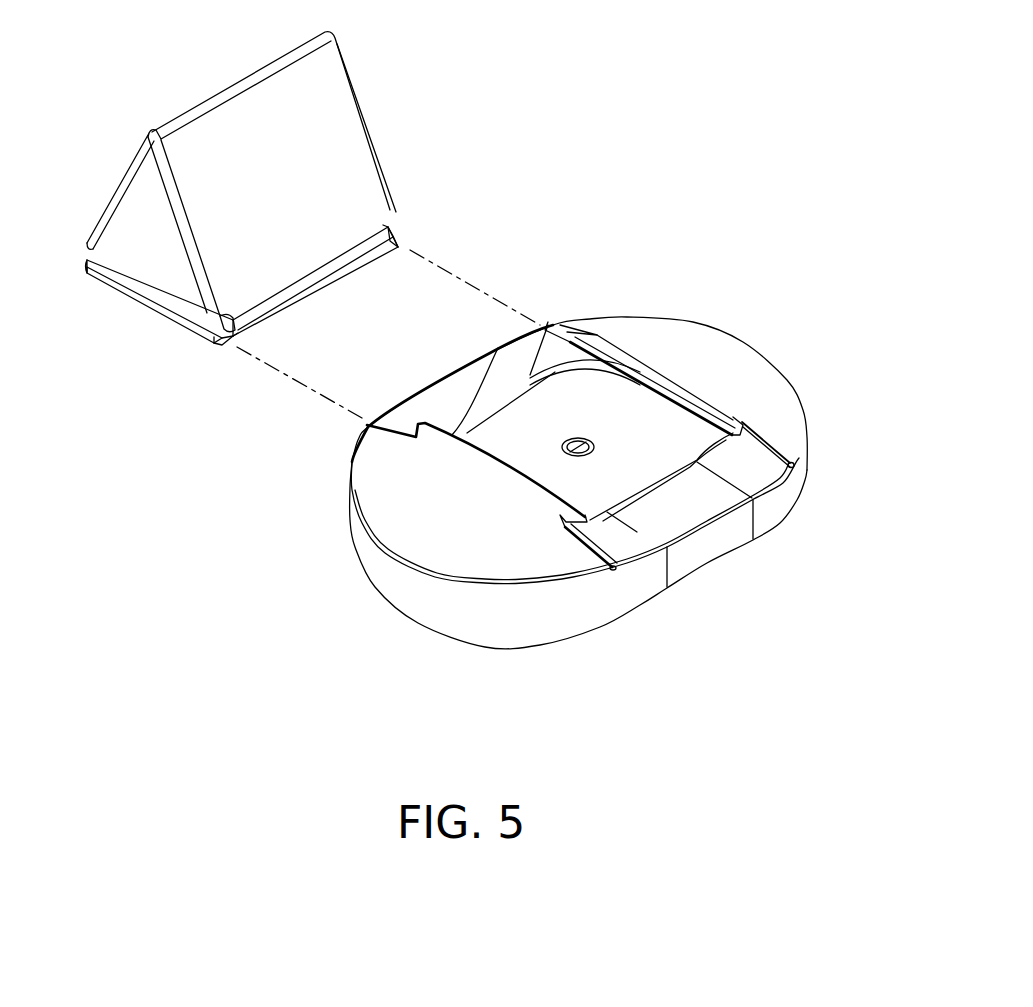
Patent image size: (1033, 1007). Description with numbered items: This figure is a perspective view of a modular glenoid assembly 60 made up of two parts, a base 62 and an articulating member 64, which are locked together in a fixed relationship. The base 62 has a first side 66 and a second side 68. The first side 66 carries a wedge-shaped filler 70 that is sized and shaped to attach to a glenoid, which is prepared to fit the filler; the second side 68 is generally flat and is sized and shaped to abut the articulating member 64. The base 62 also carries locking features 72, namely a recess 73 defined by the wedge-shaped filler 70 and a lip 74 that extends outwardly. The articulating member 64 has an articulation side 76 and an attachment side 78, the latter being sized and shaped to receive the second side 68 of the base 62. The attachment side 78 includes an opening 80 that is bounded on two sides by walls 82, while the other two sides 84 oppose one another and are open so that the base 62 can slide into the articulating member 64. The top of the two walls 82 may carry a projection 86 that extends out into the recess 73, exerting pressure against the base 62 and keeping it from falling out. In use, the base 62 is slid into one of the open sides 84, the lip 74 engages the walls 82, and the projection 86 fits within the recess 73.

The glenoid assembly 60 is at (637, 117).
The base 62 is at (395, 233).
The articulating member 64 is at (748, 348).
The first side 66 is at (396, 230).
The second side 68 is at (312, 298).
The wedge-shaped filler 70 is at (323, 78).
The locking features 72 is at (170, 305).
The recess 73 is at (245, 338).
The lip 74 is at (117, 290).
The articulation side 76 is at (780, 532).
The attachment side 78 is at (773, 403).
The opening 80 is at (492, 377).
The walls 82 is at (792, 467).
The open sides 84 is at (407, 400).
The projection 86 is at (650, 382).